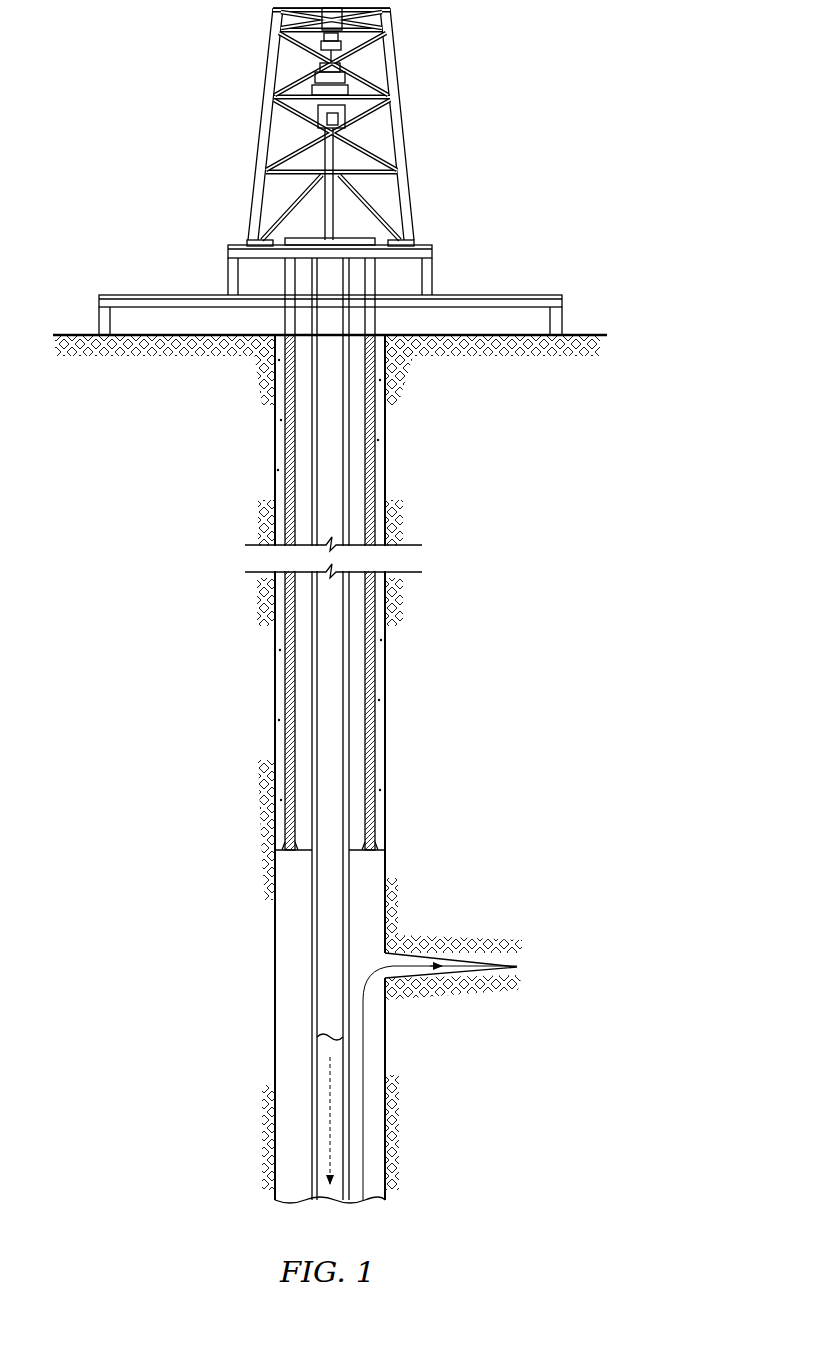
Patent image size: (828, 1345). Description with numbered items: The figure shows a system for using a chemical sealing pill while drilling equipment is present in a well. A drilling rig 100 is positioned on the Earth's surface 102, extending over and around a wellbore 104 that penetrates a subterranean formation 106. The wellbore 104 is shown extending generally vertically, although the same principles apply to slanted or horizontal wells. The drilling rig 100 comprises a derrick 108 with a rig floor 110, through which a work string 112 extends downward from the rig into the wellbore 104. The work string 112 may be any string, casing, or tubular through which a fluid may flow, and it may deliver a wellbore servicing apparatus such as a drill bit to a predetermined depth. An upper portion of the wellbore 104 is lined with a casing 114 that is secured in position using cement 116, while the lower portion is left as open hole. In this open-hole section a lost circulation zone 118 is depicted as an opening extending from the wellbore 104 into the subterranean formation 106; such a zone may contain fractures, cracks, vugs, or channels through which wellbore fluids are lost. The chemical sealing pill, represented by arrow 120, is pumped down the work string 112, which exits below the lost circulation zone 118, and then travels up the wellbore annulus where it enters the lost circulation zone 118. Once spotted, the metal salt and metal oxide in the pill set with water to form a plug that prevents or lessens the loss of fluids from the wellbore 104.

The drilling rig 100 is at (510, 106).
The Earth's surface 102 is at (585, 335).
The wellbore 104 is at (275, 458).
The subterranean formation 106 is at (420, 348).
The derrick 108 is at (270, 62).
The rig floor 110 is at (138, 295).
The work string 112 is at (352, 688).
The casing 114 is at (278, 728).
The cement 116 is at (276, 772).
The lost circulation zone 118 is at (532, 960).
The chemical sealing pill 120 is at (330, 1137).